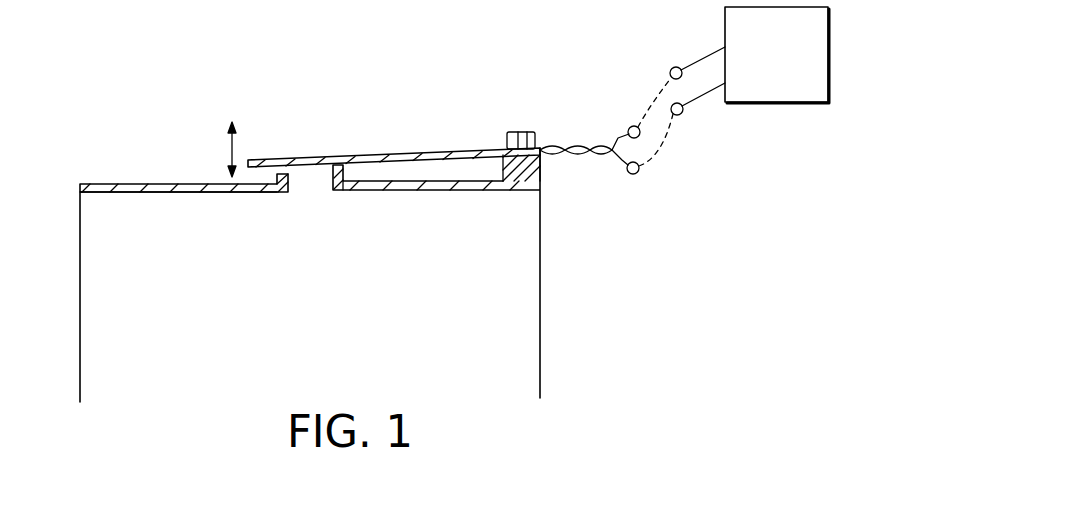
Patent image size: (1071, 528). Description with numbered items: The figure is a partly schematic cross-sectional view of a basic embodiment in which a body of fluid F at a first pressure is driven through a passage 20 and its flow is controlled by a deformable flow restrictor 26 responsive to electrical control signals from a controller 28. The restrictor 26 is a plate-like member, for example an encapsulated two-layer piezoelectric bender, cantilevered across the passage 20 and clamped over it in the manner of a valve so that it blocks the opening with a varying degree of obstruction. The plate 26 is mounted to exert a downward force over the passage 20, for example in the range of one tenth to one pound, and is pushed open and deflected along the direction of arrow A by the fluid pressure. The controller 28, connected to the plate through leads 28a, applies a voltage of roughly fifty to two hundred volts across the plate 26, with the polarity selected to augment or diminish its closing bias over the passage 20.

The passage 20 is at (308, 188).
The deformable flow restrictor 26 is at (368, 154).
The controller 28 is at (795, 70).
The lead wires 28a is at (583, 147).
The arrow A is at (229, 152).
The body of fluid F is at (290, 352).